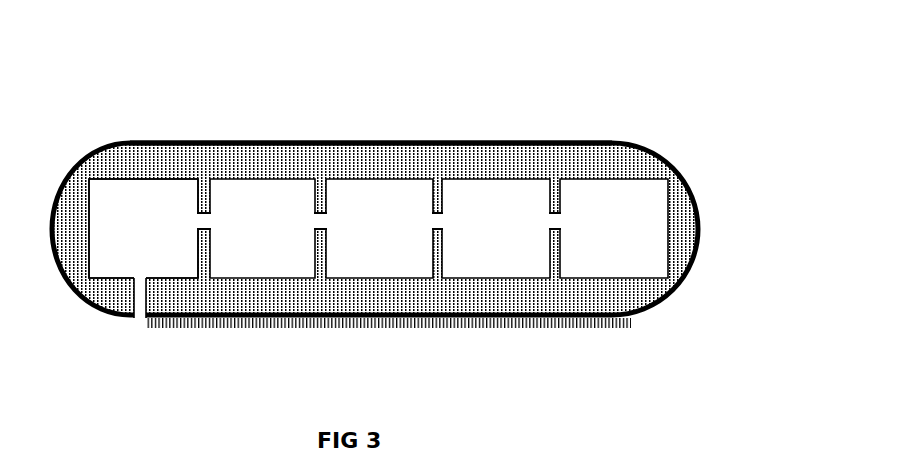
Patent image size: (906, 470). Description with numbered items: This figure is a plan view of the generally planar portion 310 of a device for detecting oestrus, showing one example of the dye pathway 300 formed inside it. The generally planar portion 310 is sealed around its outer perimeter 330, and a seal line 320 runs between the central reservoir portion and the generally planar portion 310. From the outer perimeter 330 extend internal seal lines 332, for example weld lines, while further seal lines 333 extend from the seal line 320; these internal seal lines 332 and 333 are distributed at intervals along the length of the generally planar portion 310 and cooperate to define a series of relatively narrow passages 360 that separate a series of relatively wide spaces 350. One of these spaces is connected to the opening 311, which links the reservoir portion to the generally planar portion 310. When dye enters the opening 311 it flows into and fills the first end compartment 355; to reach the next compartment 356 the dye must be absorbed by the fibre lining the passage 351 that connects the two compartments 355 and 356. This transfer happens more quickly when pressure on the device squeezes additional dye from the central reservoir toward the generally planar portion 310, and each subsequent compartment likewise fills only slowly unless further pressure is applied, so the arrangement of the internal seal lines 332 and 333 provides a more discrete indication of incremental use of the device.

The pathway 300 is at (675, 183).
The generally planar portion 310 is at (583, 162).
The opening 311 is at (138, 316).
The seal line 320 is at (553, 325).
The outer perimeter 330 is at (503, 143).
The internal seal lines 332 is at (556, 193).
The seal lines 333 is at (556, 258).
The relatively wide spaces 350 is at (140, 193).
The passage 351 is at (195, 220).
The first end compartment 355 is at (160, 244).
The next compartment 356 is at (277, 244).
The relatively narrow passages 360 is at (560, 223).